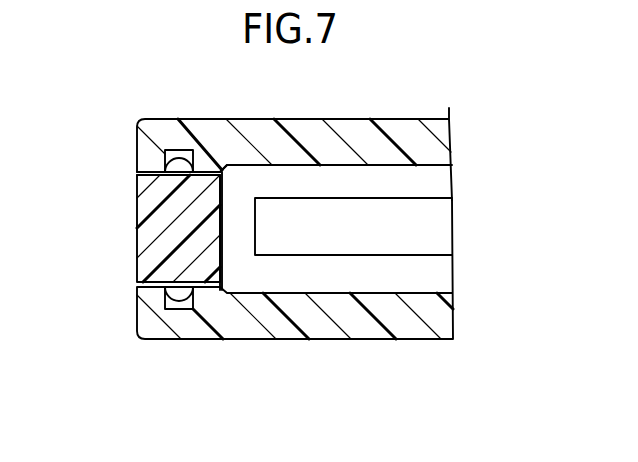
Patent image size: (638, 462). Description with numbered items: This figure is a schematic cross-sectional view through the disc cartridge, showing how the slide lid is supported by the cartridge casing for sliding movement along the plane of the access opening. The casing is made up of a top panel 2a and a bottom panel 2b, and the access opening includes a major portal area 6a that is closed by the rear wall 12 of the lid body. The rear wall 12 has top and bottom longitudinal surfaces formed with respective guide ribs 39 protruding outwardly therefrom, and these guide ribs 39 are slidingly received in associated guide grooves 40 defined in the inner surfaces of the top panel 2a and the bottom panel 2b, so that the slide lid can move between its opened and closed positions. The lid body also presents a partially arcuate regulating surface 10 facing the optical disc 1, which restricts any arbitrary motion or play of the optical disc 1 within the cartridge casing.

The optical disc 1 is at (445, 230).
The top panel 2a is at (416, 127).
The bottom panel 2b is at (443, 318).
The major portal area 6a is at (143, 178).
The regulating surface 10 is at (249, 194).
The rear wall 12 is at (138, 238).
The guide ribs 39 is at (181, 162).
The guide grooves 40 is at (181, 160).